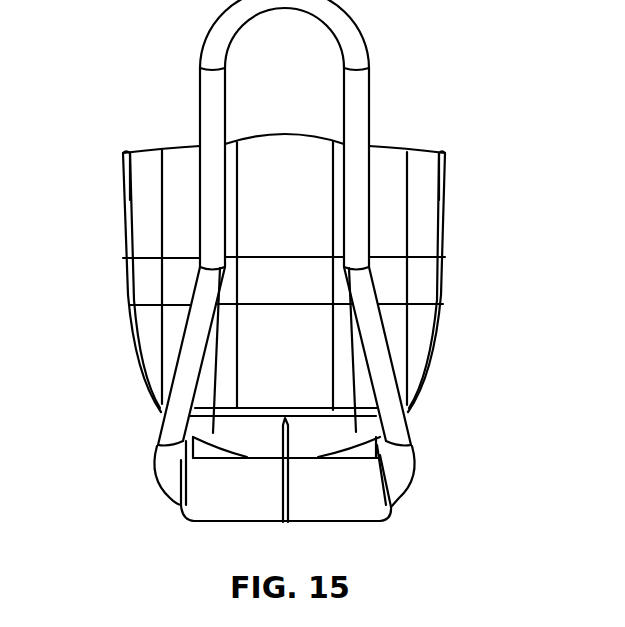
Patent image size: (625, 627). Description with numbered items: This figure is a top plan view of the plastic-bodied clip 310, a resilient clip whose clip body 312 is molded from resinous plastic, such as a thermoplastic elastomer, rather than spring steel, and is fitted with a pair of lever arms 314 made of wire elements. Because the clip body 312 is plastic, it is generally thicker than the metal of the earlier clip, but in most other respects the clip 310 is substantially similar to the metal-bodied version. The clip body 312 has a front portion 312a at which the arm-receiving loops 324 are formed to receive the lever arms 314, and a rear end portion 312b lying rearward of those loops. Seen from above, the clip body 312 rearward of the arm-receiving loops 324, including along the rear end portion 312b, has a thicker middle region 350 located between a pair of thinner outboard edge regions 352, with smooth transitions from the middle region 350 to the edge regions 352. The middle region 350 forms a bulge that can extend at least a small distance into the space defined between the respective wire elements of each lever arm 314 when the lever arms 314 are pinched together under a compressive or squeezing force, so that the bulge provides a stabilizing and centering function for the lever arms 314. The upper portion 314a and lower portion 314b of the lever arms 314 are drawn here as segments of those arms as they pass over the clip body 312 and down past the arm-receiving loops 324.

The plastic-bodied clip 310 is at (557, 85).
The clip body 312 is at (446, 245).
The front portion 312a is at (400, 541).
The rear end portion 312b is at (163, 110).
The lever arms 314 is at (368, 125).
The handle upper portion 314a is at (182, 32).
The handle lower portion 314b is at (138, 448).
The arm-receiving loops 324 is at (205, 522).
The middle region 350 is at (273, 115).
The outboard edge regions 352 is at (128, 145).